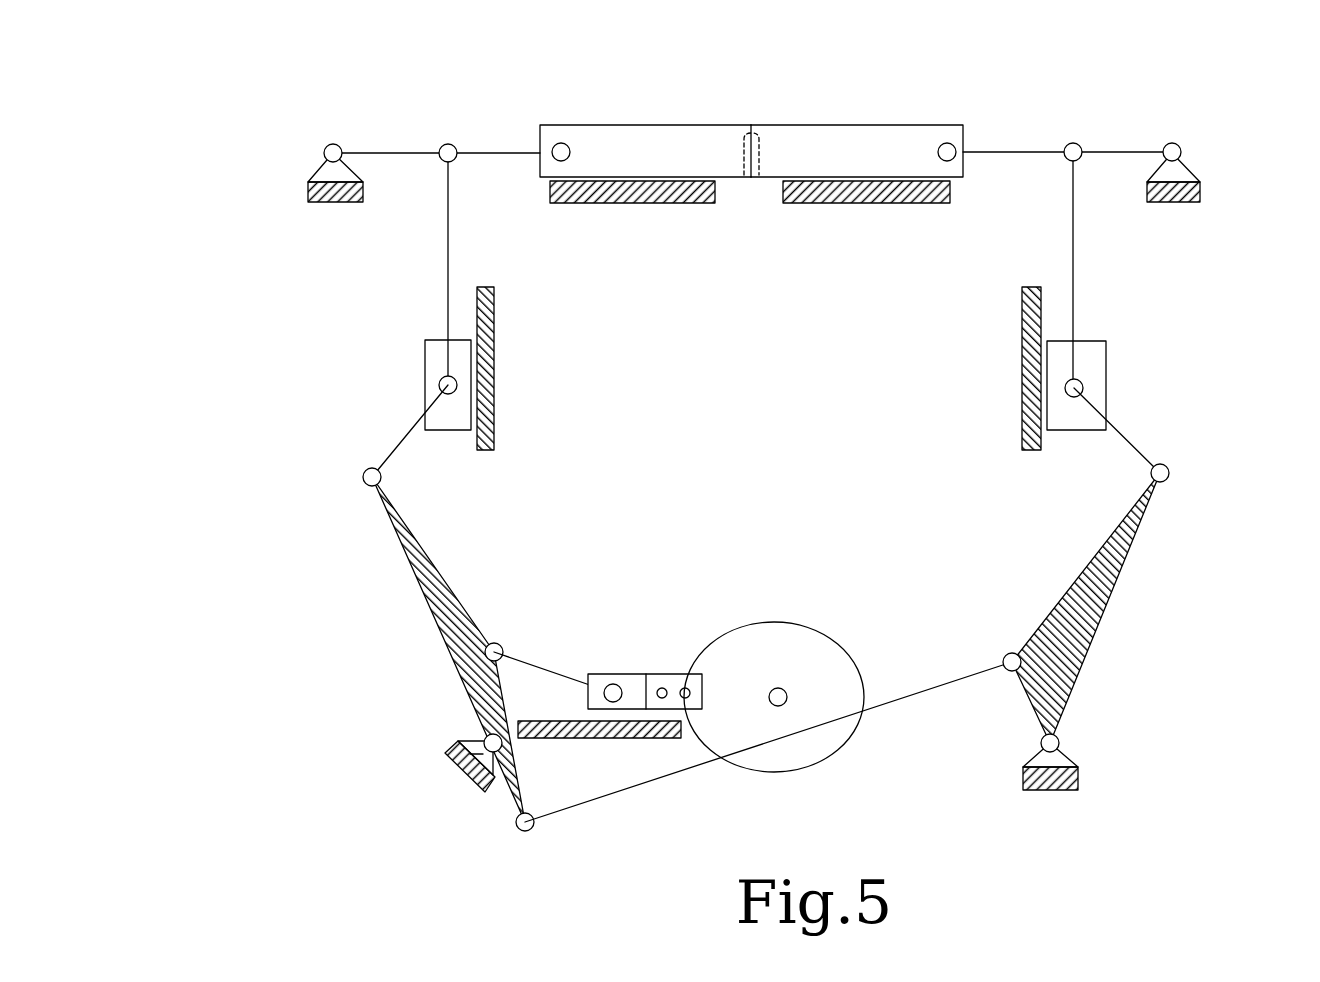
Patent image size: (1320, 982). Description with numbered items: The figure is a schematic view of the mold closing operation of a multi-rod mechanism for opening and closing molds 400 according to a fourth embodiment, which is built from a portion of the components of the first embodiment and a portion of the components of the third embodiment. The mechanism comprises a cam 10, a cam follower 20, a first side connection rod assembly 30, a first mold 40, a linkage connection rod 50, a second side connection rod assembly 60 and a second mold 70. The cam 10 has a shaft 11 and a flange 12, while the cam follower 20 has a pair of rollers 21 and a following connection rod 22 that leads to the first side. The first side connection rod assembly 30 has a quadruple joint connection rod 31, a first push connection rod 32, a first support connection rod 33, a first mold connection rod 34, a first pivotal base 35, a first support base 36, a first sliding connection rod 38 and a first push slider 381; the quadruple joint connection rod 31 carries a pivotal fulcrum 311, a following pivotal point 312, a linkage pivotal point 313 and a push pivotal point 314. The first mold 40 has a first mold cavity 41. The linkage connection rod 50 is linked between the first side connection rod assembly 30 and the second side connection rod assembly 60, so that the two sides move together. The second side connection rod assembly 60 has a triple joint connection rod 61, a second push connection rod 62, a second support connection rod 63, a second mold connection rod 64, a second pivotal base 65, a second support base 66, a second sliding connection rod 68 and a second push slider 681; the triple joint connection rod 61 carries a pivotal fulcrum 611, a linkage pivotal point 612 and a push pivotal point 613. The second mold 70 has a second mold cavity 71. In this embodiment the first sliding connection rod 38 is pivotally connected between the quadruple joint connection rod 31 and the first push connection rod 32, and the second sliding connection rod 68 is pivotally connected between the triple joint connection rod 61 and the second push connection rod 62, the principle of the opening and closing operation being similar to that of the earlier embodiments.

The multi-rod mechanism for opening and closing molds 400 is at (335, 70).
The cam 10 is at (801, 659).
The shaft 11 is at (787, 691).
The flange 12 is at (748, 620).
The cam follower 20 is at (610, 673).
The rollers 21 is at (661, 687).
The following connection rod 22 is at (545, 665).
The first side connection rod assembly 30 is at (370, 541).
The quadruple joint connection rod 31 is at (430, 590).
The pivotal fulcrum 311 is at (484, 740).
The following pivotal point 312 is at (494, 642).
The linkage pivotal point 313 is at (525, 832).
The push pivotal point 314 is at (383, 474).
The first push connection rod 32 is at (450, 253).
The first support connection rod 33 is at (402, 147).
The first mold connection rod 34 is at (487, 150).
The first pivotal base 35 is at (463, 777).
The first support base 36 is at (318, 172).
The first sliding connection rod 38 is at (407, 433).
The first push slider 381 is at (435, 347).
The first mold 40 is at (663, 124).
The first mold cavity 41 is at (745, 182).
The linkage connection rod 50 is at (652, 782).
The second side connection rod assembly 60 is at (1170, 513).
The triple joint connection rod 61 is at (1110, 598).
The pivotal fulcrum 611 is at (1060, 732).
The linkage pivotal point 612 is at (1013, 652).
The push pivotal point 613 is at (1170, 455).
The second push connection rod 62 is at (1076, 250).
The second support connection rod 63 is at (1120, 150).
The second mold connection rod 64 is at (1010, 150).
The second pivotal base 65 is at (1072, 753).
The second support base 66 is at (1190, 168).
The second sliding connection rod 68 is at (1123, 425).
The second push slider 681 is at (1097, 368).
The second mold 70 is at (845, 124).
The second mold cavity 71 is at (758, 182).